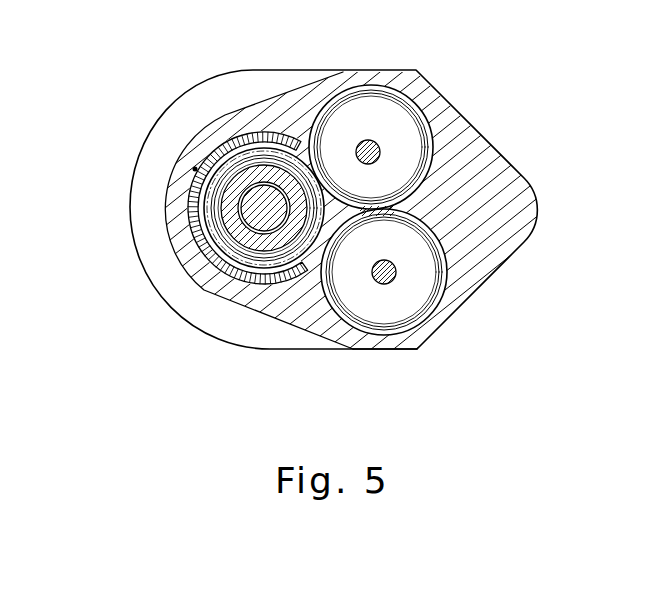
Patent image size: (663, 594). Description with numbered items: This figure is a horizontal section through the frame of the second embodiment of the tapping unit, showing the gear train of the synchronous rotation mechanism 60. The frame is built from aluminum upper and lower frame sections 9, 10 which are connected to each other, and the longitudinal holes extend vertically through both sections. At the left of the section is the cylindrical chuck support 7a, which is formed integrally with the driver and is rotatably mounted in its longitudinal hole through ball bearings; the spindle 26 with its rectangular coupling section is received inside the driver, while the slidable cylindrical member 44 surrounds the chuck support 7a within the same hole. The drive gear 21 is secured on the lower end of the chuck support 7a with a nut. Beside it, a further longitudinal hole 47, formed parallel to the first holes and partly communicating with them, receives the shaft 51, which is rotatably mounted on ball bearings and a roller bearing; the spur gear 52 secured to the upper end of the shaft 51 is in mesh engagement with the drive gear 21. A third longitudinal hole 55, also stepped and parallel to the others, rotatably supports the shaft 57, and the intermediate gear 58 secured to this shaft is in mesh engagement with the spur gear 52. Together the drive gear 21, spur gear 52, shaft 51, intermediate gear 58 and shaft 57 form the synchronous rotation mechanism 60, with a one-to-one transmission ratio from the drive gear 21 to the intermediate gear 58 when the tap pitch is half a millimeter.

The upper frame section 9 is at (502, 171).
The lower frame section 10 is at (303, 70).
The drive gear 21 is at (233, 153).
The cylindrical member 44 is at (187, 200).
The spindle 26 is at (257, 235).
The chuck support 7a is at (243, 222).
The longitudinal hole 47 is at (399, 114).
The spur gear 52 is at (368, 99).
The shaft 51 is at (380, 152).
The longitudinal hole 55 is at (426, 300).
The intermediate gear 58 is at (398, 320).
The shaft 57 is at (391, 265).
The synchronous rotation mechanism 60 is at (362, 353).